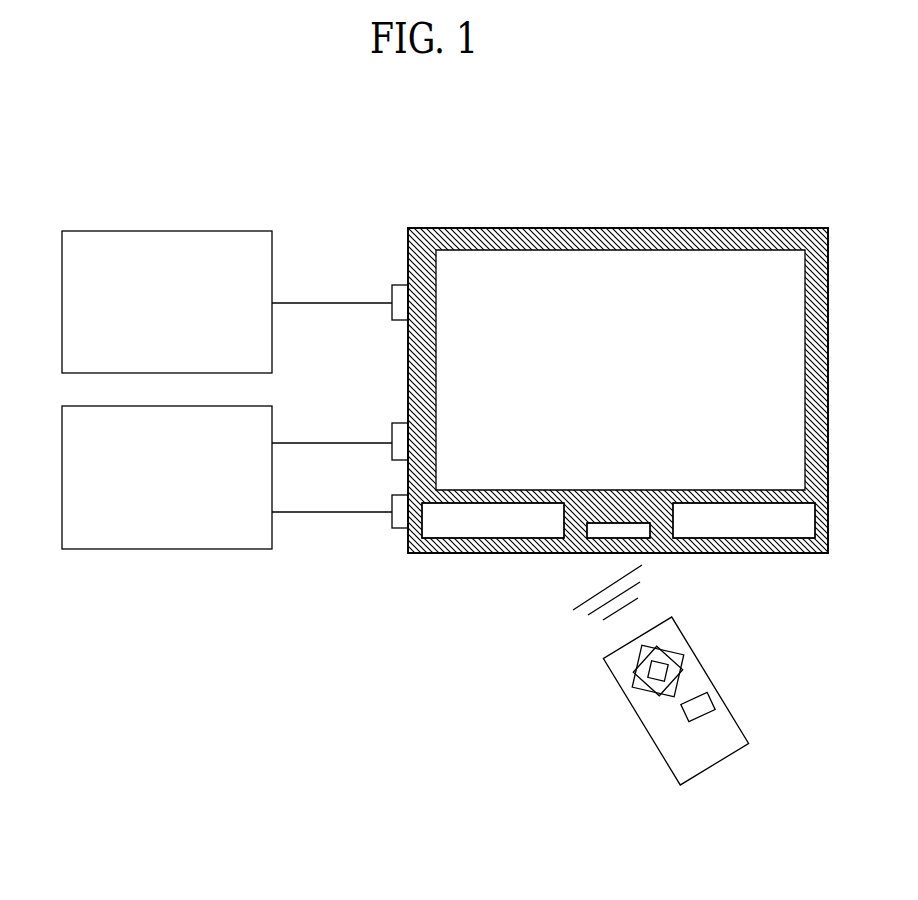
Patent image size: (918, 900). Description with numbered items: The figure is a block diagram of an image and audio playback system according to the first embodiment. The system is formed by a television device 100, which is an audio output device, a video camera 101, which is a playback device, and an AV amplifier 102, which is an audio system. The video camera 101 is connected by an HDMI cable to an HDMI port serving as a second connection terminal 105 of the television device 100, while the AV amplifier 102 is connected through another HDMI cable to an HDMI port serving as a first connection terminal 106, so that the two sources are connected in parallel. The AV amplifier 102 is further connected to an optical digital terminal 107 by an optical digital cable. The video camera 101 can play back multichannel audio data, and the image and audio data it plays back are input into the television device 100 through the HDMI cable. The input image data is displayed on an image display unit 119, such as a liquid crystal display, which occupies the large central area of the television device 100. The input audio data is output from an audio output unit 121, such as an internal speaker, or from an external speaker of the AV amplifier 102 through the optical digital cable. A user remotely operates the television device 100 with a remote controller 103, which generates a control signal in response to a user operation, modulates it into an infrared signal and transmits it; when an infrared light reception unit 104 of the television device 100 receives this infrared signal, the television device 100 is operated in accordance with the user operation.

The television device 100 is at (613, 228).
The video camera 101 is at (152, 231).
The AV amplifier 102 is at (185, 549).
The remote controller 103 is at (737, 732).
The infrared light reception unit 104 is at (638, 533).
The HDMI port (second connection terminal) 105 is at (394, 285).
The HDMI port (first connection terminal) 106 is at (394, 423).
The optical digital terminal 107 is at (392, 500).
The image display unit 119 is at (752, 249).
The audio output unit 121 is at (473, 532).